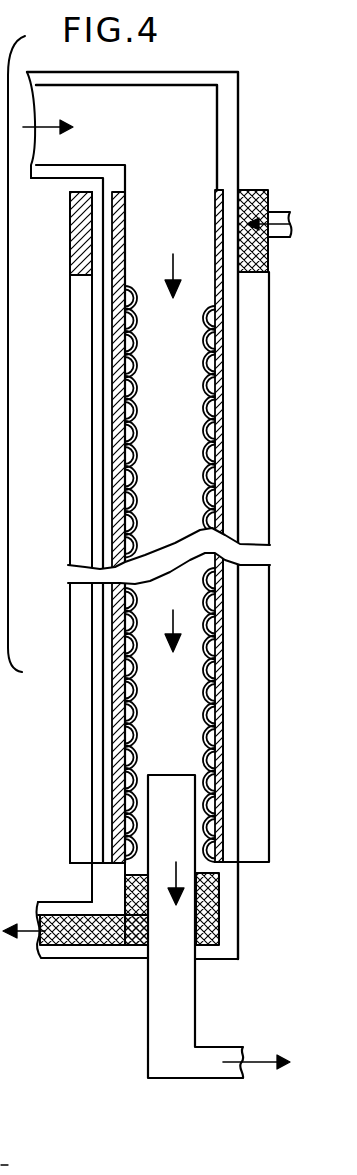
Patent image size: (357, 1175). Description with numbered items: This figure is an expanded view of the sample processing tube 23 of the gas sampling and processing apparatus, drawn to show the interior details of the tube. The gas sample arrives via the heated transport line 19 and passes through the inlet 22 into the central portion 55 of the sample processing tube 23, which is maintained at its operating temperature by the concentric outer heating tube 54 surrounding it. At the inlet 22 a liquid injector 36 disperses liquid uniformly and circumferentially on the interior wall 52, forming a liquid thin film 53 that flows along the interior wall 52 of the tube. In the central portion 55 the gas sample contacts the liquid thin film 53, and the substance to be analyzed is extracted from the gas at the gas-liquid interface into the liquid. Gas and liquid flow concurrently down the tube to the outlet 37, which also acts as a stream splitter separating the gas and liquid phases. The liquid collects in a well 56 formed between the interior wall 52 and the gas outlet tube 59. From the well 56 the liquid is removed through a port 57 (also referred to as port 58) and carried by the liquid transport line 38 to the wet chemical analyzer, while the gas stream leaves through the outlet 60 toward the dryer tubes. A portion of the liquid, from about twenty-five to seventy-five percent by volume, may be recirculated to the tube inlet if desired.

The transport line 19 is at (117, 134).
The inlet 22 is at (181, 203).
The sample processing tube 23 is at (276, 366).
The liquid injector 36 is at (278, 209).
The outlet 37 is at (217, 966).
The liquid transport line 38 is at (38, 905).
The interior wall 52 is at (118, 490).
The liquid thin film 53 is at (212, 316).
The concentric outer heating tube 54 is at (85, 372).
The central portion 55 is at (187, 354).
The well 56 is at (124, 861).
The port 57 is at (185, 852).
The port 58 is at (128, 928).
The gas outlet tube 59 is at (125, 893).
The outlet 60 is at (172, 775).